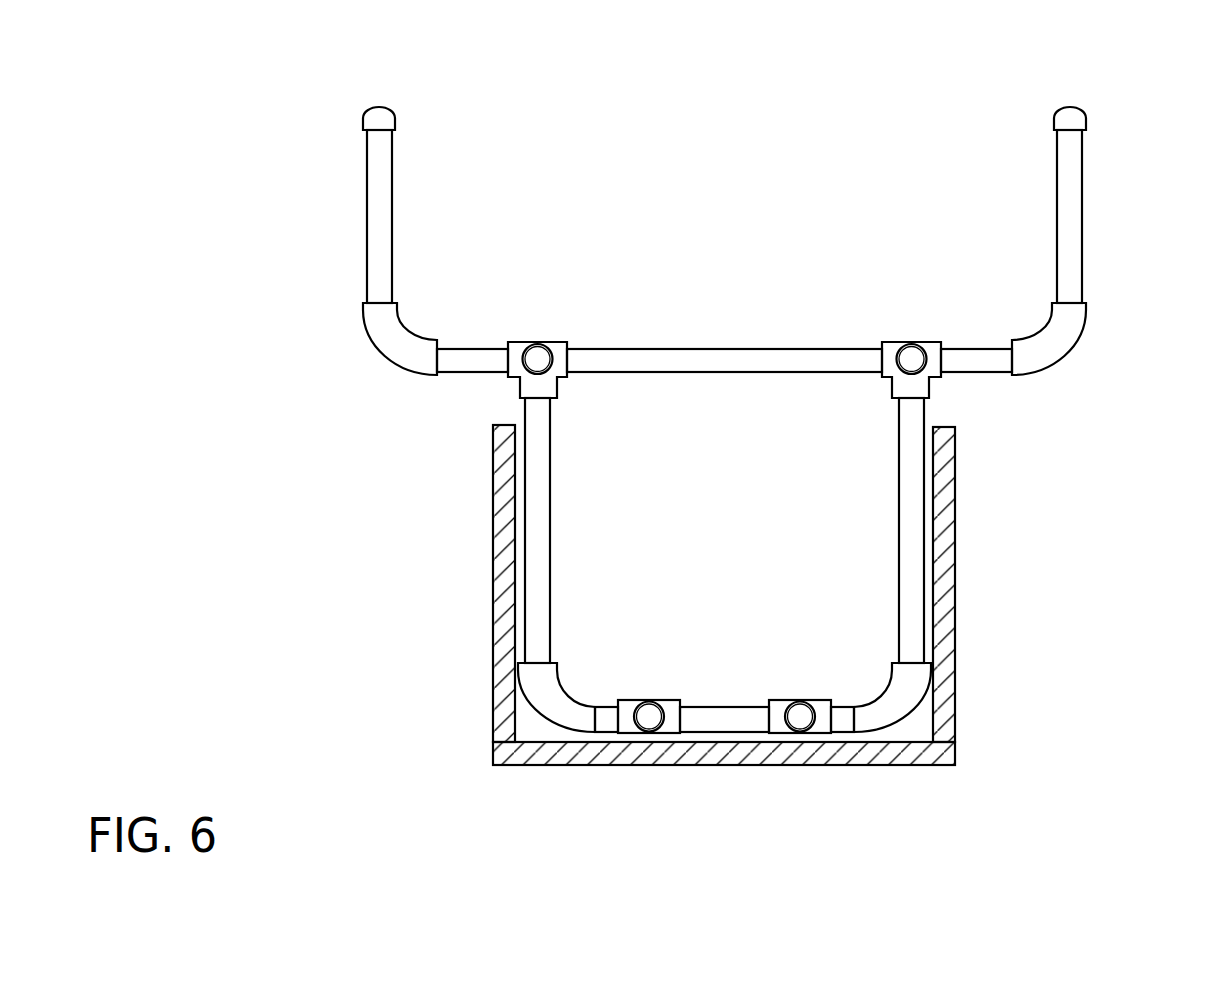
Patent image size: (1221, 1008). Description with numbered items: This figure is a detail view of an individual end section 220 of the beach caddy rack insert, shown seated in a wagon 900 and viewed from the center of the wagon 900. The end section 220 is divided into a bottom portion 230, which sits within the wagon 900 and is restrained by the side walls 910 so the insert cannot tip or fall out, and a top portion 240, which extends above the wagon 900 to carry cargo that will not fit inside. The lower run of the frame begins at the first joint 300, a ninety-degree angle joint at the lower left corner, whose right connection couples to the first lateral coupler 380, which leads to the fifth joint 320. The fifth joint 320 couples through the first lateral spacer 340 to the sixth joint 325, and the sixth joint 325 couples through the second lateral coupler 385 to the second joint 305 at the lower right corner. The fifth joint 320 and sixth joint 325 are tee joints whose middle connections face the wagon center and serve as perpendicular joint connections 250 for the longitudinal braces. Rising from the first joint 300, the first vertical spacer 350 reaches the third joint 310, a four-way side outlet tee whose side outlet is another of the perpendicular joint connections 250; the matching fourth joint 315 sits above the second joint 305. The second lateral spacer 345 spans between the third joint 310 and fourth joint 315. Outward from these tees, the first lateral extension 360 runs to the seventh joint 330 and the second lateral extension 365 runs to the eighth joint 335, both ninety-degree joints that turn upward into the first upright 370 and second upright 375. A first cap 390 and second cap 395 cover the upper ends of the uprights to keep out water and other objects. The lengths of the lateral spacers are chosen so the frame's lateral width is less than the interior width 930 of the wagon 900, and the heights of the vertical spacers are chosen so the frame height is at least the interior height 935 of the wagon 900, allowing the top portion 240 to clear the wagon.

The individual end section 220 is at (1086, 90).
The bottom portion 230 is at (358, 405).
The top portion 240 is at (325, 380).
The perpendicular joint connections 250 is at (542, 367).
The first joint 300 is at (566, 713).
The second joint 305 is at (902, 695).
The third joint 310 is at (562, 342).
The fourth joint 315 is at (890, 347).
The fifth joint 320 is at (625, 712).
The sixth joint 325 is at (820, 707).
The seventh joint 330 is at (410, 343).
The eighth joint 335 is at (1063, 335).
The first lateral spacer 340 is at (733, 720).
The second lateral spacer 345 is at (724, 412).
The first vertical spacer 350 is at (724, 530).
The first lateral extension 360 is at (482, 343).
The second lateral extension 365 is at (973, 362).
The first upright 370 is at (383, 185).
The second upright 375 is at (1073, 207).
The first lateral coupler 380 is at (608, 720).
The second lateral coupler 385 is at (840, 720).
The first cap 390 is at (385, 119).
The second cap 395 is at (1073, 118).
The wagon 900 is at (947, 757).
The side walls 910 is at (953, 550).
The interior width 930 is at (933, 892).
The interior height 935 is at (1128, 572).